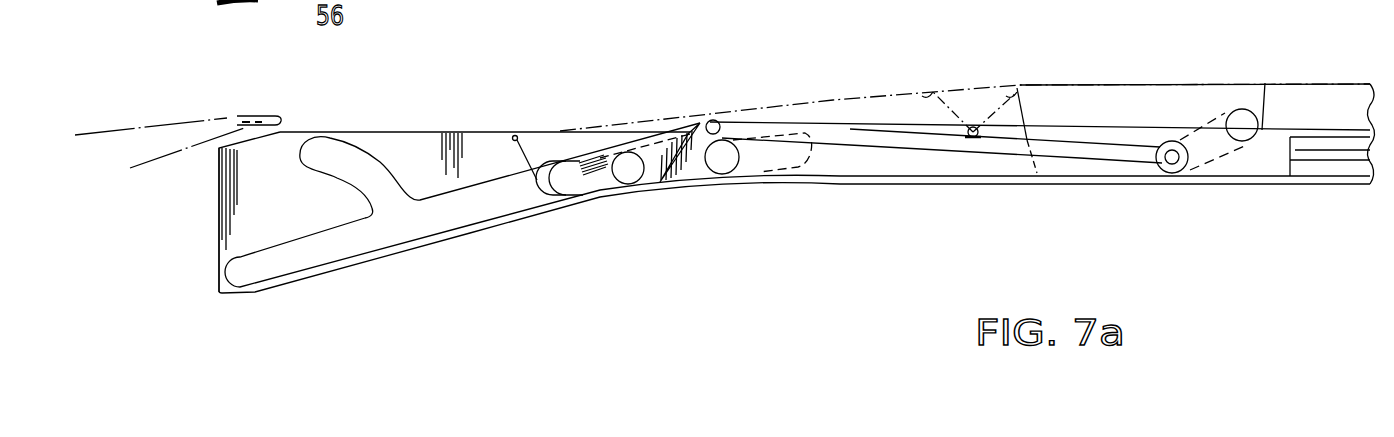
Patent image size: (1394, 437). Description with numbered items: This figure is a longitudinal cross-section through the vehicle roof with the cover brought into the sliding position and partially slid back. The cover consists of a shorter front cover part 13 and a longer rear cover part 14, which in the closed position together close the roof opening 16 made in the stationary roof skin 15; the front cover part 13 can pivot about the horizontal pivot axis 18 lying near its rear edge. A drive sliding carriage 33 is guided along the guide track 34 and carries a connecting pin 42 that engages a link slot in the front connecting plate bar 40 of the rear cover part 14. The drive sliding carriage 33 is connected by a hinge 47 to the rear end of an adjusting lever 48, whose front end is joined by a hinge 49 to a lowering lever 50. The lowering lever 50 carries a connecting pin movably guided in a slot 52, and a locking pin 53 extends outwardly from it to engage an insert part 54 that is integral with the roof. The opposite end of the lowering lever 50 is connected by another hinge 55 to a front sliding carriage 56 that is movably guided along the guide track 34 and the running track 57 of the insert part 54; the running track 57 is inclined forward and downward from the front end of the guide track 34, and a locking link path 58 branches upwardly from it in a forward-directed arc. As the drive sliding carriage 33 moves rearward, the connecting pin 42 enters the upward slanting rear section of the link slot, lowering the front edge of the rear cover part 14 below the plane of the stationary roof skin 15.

The front cover part 13 is at (868, 98).
The rear cover part 14 is at (1338, 90).
The stationary roof skin 15 is at (197, 122).
The roof opening 16 is at (438, 122).
The horizontal pivot axis 18 is at (975, 126).
The drive sliding carriage 33 is at (1265, 152).
The guide track 34 is at (1012, 160).
The front connecting plate bar 40 is at (1152, 100).
The connecting pin 42 is at (1240, 108).
The hinge 47 is at (1172, 175).
The adjusting lever 48 is at (905, 148).
The hinge 49 is at (717, 118).
The lowering lever 50 is at (684, 128).
The slot 52 is at (778, 155).
The locking pin 53 is at (722, 165).
The insert part 54 is at (240, 214).
The hinge 55 is at (628, 178).
The front sliding carriage 56 is at (585, 180).
The running track 57 is at (322, 247).
The locking link path 58 is at (343, 160).